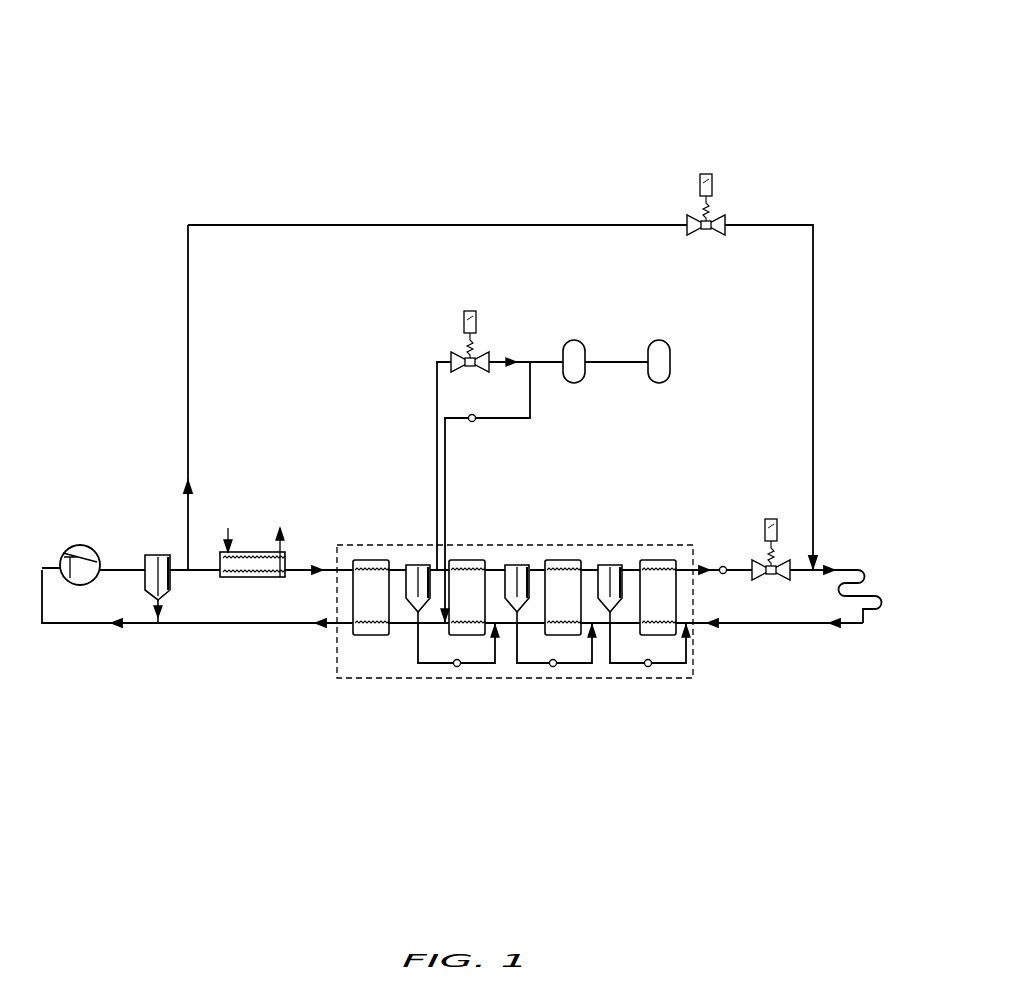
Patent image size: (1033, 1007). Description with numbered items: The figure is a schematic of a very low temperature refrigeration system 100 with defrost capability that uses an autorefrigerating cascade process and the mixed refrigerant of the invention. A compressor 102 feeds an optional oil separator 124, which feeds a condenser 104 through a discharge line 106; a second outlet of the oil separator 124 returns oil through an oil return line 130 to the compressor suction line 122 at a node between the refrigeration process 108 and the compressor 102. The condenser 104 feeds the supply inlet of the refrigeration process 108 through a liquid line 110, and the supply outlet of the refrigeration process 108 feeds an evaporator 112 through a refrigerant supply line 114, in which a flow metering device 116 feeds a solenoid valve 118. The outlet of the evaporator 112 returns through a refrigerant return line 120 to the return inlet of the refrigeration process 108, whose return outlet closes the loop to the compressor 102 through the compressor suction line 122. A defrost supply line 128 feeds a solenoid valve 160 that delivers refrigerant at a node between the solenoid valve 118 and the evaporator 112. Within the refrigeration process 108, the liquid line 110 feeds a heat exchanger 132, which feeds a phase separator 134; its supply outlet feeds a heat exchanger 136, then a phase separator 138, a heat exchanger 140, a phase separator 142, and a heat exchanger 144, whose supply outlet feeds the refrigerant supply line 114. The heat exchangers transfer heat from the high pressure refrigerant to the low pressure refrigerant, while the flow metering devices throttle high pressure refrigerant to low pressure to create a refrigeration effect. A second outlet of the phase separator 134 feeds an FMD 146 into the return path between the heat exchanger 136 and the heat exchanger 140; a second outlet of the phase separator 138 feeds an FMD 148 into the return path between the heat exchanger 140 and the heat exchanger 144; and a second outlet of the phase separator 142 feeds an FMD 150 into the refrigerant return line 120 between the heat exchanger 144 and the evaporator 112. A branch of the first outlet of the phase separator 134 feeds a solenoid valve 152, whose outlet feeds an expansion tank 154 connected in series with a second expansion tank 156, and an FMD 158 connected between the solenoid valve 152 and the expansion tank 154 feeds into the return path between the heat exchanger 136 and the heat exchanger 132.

The refrigeration system 100 is at (658, 102).
The compressor 102 is at (78, 587).
The condenser 104 is at (258, 550).
The discharge line 106 is at (178, 553).
The refrigeration process 108 is at (353, 692).
The liquid line 110 is at (290, 567).
The evaporator 112 is at (868, 614).
The refrigerant supply line 114 is at (724, 574).
The flow metering device 116 is at (726, 565).
The solenoid valve 118 is at (790, 560).
The refrigerant return line 120 is at (735, 626).
The compressor suction line 122 is at (131, 626).
The oil separator 124 is at (155, 553).
The defrost supply line 128 is at (482, 223).
The oil return line 130 is at (163, 610).
The heat exchanger 132 is at (353, 628).
The phase separator 134 is at (408, 563).
The heat exchanger 136 is at (449, 633).
The phase separator 138 is at (520, 563).
The heat exchanger 140 is at (545, 633).
The phase separator 142 is at (612, 563).
The heat exchanger 144 is at (643, 633).
The flow metering device 146 is at (460, 666).
The flow metering device 148 is at (556, 666).
The flow metering device 150 is at (651, 666).
The solenoid valve 152 is at (480, 355).
The expansion tank 154 is at (578, 343).
The expansion tank 156 is at (672, 362).
The flow metering device 158 is at (485, 403).
The solenoid valve 160 is at (722, 217).